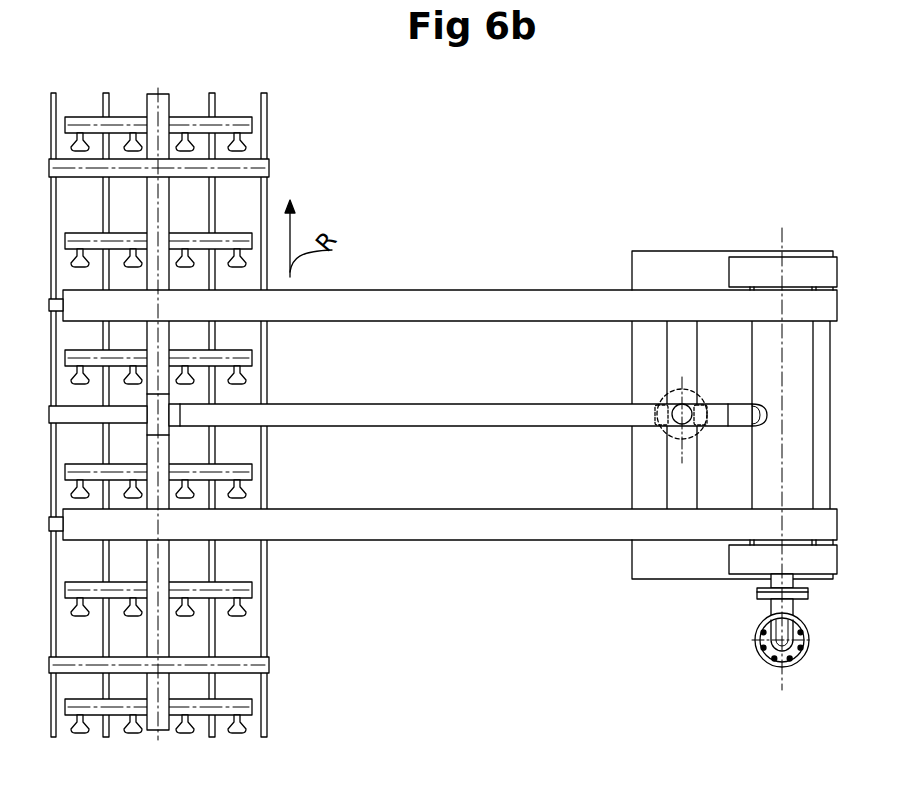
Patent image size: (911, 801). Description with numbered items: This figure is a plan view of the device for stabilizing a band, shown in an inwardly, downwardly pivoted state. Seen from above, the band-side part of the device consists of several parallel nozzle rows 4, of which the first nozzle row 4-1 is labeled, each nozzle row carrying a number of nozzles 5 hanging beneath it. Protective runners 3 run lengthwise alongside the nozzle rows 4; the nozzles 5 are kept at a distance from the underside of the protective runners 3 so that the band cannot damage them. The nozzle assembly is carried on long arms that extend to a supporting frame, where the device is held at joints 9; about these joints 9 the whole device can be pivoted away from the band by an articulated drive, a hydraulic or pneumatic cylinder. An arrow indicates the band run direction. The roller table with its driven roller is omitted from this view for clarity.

The protective runner 3 is at (213, 613).
The nozzle row 4 is at (222, 104).
The nozzle row 4-1 is at (240, 110).
The nozzle 5 is at (232, 146).
The joint 9 is at (800, 268).